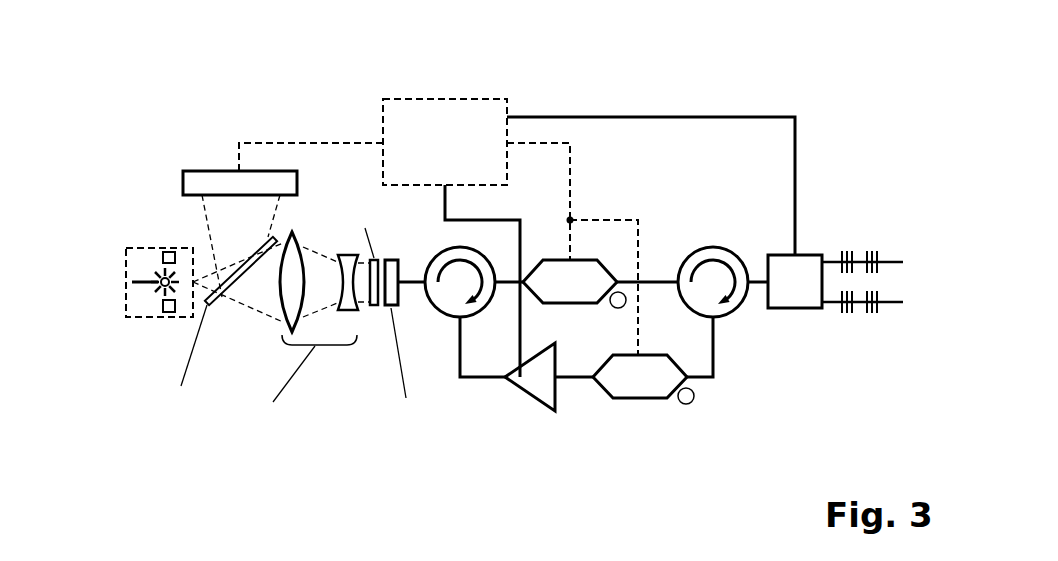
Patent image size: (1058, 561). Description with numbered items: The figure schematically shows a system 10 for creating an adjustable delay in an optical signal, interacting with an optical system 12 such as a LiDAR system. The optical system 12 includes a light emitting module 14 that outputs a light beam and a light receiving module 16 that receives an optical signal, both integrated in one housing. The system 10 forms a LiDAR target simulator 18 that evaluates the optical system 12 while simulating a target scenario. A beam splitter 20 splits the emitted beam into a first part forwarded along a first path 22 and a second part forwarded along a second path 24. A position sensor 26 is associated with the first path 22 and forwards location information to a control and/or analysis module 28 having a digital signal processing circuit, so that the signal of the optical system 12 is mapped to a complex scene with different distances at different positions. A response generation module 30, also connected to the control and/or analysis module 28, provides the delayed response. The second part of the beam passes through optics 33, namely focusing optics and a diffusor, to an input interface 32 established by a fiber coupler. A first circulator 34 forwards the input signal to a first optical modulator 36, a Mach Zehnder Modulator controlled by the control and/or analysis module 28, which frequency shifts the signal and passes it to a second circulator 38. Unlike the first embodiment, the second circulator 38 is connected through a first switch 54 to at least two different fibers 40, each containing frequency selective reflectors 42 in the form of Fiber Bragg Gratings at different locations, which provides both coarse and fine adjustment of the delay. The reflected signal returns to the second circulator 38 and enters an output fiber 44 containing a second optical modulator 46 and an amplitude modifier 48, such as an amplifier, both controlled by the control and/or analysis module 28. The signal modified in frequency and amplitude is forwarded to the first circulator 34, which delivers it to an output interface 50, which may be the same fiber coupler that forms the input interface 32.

The system 10 is at (782, 90).
The optical system 12 is at (126, 280).
The light emitting module 14 is at (165, 253).
The light receiving module 16 is at (163, 306).
The LiDAR target simulator 18 is at (600, 200).
The beam splitter 20 is at (222, 308).
The first path 22 is at (290, 216).
The second path 24 is at (248, 330).
The position sensor 26 is at (213, 171).
The control and/or analysis module 28 is at (410, 98).
The response generation module 30 is at (658, 200).
The input interface 32 is at (400, 243).
The optics 33 is at (318, 355).
The first circulator 34 is at (450, 315).
The first optical modulator 36 is at (556, 260).
The second circulator 38 is at (708, 247).
The fiber 40 is at (860, 245).
The frequency selective reflector 42 is at (848, 238).
The output fiber 44 is at (716, 373).
The second optical modulator 46 is at (657, 398).
The amplitude modifier 48 is at (557, 400).
The output interface 50 is at (381, 318).
The first switch 54 is at (787, 255).